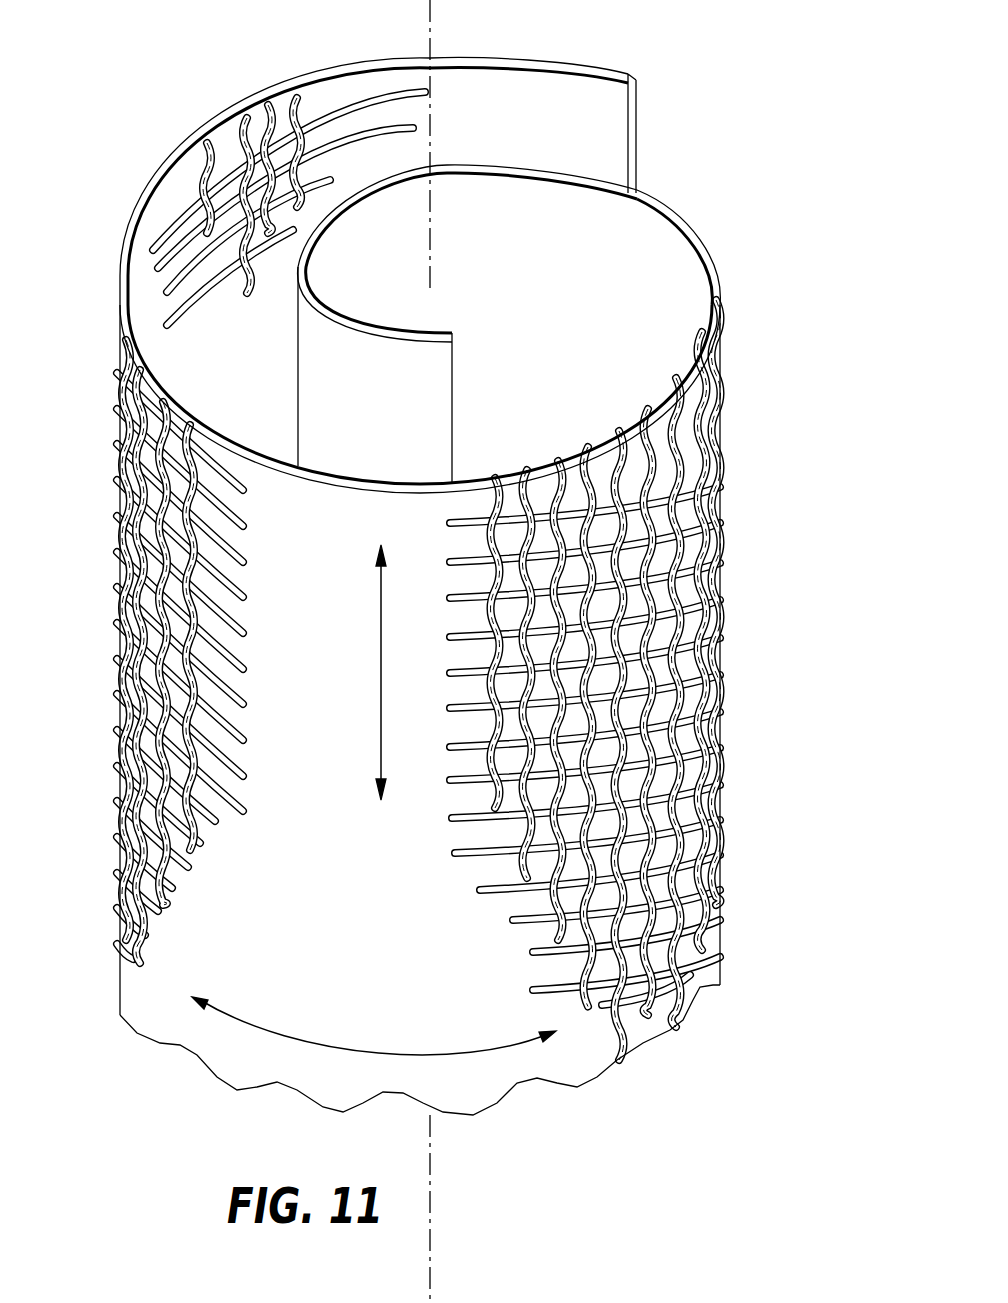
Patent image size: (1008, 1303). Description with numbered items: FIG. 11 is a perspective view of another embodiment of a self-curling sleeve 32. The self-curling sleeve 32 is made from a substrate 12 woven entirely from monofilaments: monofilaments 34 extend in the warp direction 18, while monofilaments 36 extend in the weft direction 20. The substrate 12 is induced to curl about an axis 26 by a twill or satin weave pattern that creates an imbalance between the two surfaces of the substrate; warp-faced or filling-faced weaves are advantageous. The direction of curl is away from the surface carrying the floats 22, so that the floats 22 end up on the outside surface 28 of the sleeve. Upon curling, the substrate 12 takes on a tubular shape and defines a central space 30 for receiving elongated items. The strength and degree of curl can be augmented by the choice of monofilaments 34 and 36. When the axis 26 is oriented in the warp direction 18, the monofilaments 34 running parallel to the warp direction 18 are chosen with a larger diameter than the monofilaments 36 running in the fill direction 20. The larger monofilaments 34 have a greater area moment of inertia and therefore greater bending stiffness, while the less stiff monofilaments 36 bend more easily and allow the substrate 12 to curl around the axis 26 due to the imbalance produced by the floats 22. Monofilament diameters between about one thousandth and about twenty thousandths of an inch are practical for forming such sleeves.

The substrate 12 is at (598, 105).
The warp direction 18 is at (378, 664).
The weft direction 20 is at (345, 1052).
The floats 22 is at (702, 683).
The axis 26 is at (432, 18).
The outside surface 28 is at (707, 794).
The central space 30 is at (460, 230).
The self-curling sleeve 32 is at (775, 508).
The monofilaments 34 is at (520, 907).
The monofilaments 36 is at (480, 860).